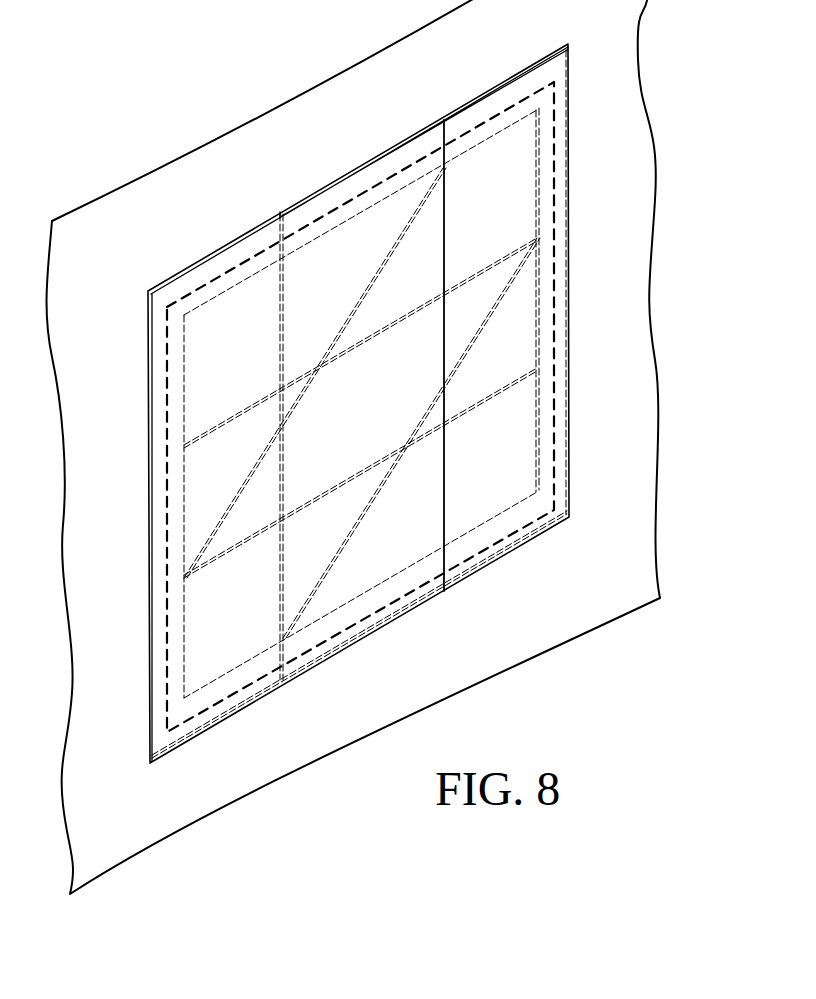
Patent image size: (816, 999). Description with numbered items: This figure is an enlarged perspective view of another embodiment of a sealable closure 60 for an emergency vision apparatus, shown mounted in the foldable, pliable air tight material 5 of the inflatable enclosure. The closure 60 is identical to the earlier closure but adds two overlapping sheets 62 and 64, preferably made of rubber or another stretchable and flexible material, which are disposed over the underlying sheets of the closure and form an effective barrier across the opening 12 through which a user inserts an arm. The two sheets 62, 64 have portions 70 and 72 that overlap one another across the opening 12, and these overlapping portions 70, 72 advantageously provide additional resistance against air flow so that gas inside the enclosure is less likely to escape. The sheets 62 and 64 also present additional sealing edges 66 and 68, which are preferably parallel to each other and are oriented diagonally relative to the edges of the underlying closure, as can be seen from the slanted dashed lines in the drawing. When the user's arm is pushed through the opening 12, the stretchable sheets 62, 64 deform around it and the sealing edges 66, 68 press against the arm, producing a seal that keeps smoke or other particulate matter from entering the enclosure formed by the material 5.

The air tight material 5 is at (600, 578).
The closure 60 is at (224, 233).
The opening 12 is at (232, 292).
The sheet 62 is at (500, 215).
The overlapping portion 70 is at (508, 158).
The sheet 64 is at (218, 592).
The sealing edge 66 is at (370, 272).
The sealing edge 68 is at (488, 305).
The overlapping portion 72 is at (216, 650).